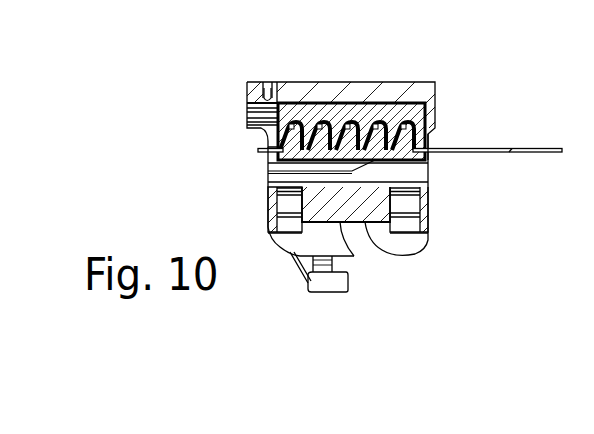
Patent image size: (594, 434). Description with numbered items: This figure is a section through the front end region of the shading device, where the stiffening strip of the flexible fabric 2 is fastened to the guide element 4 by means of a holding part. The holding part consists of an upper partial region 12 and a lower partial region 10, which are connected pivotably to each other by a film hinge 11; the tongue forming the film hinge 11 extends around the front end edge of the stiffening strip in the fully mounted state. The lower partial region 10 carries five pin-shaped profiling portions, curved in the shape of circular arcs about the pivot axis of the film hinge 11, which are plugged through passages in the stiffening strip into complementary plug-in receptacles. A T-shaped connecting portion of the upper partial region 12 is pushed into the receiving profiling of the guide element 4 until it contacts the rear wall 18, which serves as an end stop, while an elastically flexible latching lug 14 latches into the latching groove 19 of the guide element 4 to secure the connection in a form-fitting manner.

The flexible fabric 2 is at (520, 152).
The guide element 4 is at (337, 82).
The lower partial region 10 is at (407, 161).
The film hinge 11 is at (262, 145).
The upper partial region 12 is at (401, 108).
The latching lug 14 is at (247, 105).
The rear wall 18 is at (428, 115).
The latching groove 19 is at (270, 82).